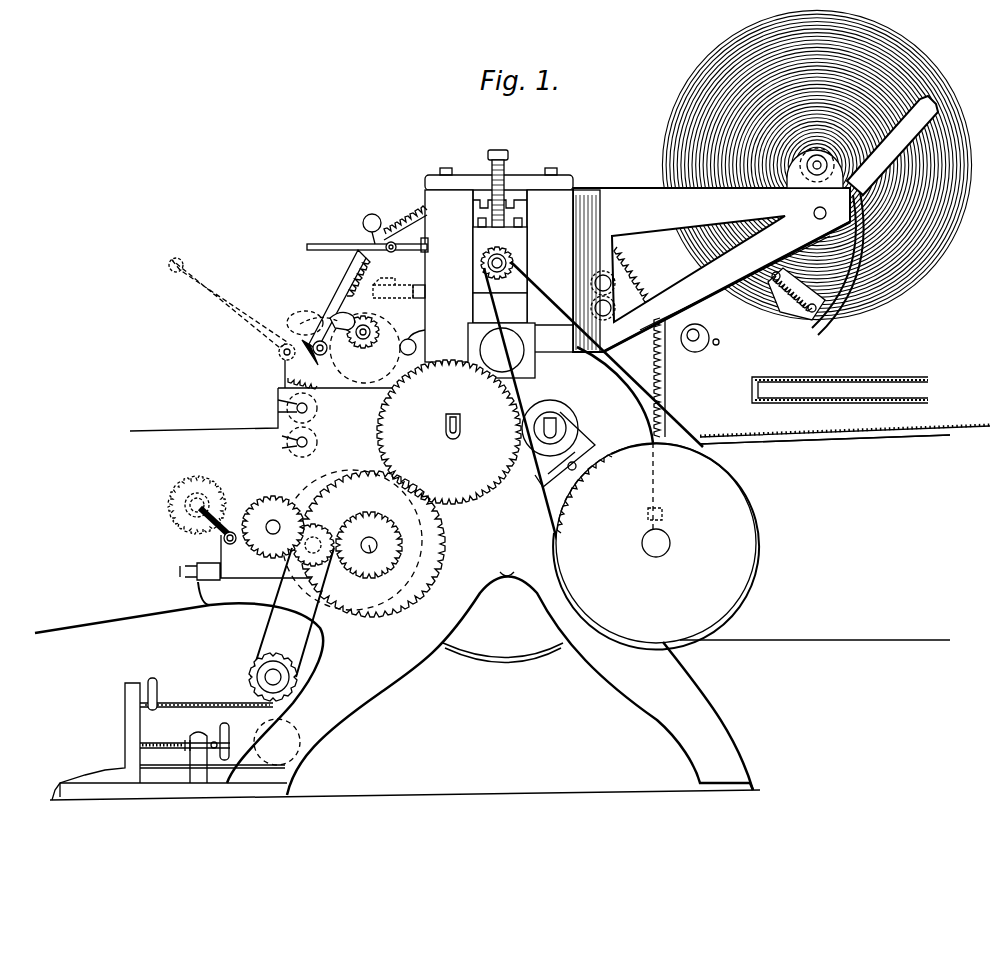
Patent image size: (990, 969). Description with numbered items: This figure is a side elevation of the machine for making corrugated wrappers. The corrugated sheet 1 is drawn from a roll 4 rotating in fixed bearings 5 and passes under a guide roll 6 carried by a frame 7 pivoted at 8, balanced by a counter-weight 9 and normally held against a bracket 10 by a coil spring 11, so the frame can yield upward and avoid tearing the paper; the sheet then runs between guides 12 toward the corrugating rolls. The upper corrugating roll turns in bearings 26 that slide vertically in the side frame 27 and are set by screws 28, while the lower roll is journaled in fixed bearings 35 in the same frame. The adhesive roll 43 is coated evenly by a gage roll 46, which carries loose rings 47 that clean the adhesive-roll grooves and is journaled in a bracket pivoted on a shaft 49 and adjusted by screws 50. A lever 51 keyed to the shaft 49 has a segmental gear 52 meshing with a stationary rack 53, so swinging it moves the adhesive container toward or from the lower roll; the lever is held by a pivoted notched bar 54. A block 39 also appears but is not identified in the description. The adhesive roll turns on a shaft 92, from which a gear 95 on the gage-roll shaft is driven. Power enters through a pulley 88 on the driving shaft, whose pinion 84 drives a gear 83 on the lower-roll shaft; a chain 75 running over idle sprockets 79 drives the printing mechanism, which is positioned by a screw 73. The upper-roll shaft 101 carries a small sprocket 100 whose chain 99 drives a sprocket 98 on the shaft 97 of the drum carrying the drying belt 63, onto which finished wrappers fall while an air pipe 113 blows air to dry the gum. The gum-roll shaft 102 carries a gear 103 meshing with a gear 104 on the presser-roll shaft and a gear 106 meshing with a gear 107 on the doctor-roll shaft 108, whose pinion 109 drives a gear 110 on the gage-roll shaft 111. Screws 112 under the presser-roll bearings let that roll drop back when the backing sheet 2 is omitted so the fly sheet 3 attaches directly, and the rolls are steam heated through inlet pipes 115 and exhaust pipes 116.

The corrugated sheet 1 is at (684, 276).
The backing sheet 2 is at (218, 428).
The fly sheet 3 is at (148, 622).
The roll 4 is at (703, 70).
The fixed bearings 5 is at (804, 180).
The guide roll 6 is at (686, 345).
The frame 7 is at (737, 300).
The pivot 8 is at (815, 220).
The counter-weight 9 is at (892, 145).
The bracket 10 is at (803, 322).
The coil spring 11 is at (852, 305).
The guides 12 is at (608, 306).
The bearings 26 is at (480, 237).
The side frame 27 is at (445, 207).
The screws 28 is at (500, 156).
The fixed bearings 35 is at (530, 365).
The guide block 39 is at (414, 290).
The adhesive roll 43 is at (357, 318).
The gage roll 46 is at (322, 320).
The loose rings 47 is at (338, 318).
The shaft 49 is at (313, 348).
The screws 50 is at (288, 318).
The lever 51 is at (352, 275).
The segmental gear 52 is at (300, 350).
The stationary rack 53 is at (286, 380).
The pivoted notched bar 54 is at (322, 262).
The drying belt 63 is at (855, 445).
The screw 73 is at (170, 751).
The chain 75 is at (183, 703).
The idle sprockets 79 is at (255, 672).
The gear 83 is at (415, 212).
The pinion 84 is at (506, 580).
The pulley 88 is at (507, 660).
The shaft 92 is at (414, 343).
The gear 95 is at (280, 350).
The shaft 97 is at (672, 538).
The sprocket 98 is at (690, 568).
The chain 99 is at (680, 430).
The small sprocket 100 is at (562, 235).
The shaft 101 is at (504, 258).
The shaft 102 is at (370, 570).
The gear 103 is at (412, 585).
The gear 104 is at (449, 432).
The gear 106 is at (388, 545).
The gear 107 is at (325, 488).
The shaft 108 is at (295, 612).
The pinion 109 is at (312, 568).
The gear 110 is at (244, 500).
The shaft 111 is at (273, 520).
The screws 112 is at (592, 462).
The air pipe 113 is at (900, 376).
The inlet pipes 115 is at (540, 430).
The exhaust pipes 116 is at (462, 421).